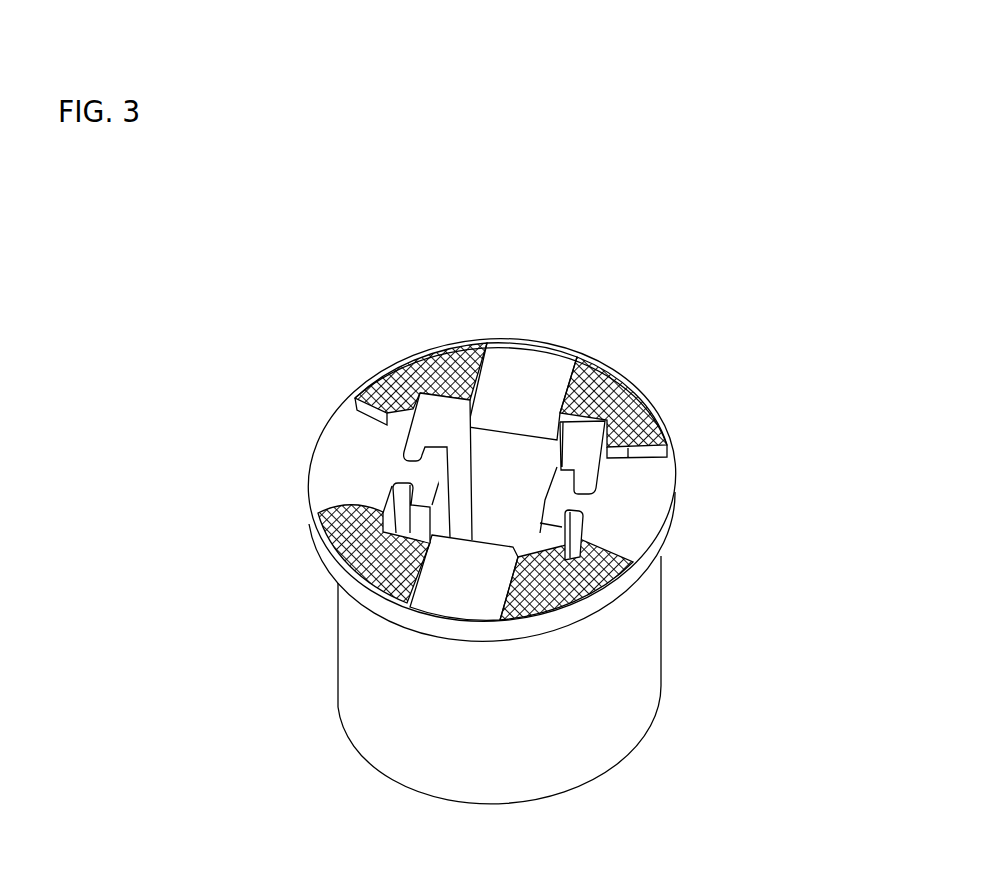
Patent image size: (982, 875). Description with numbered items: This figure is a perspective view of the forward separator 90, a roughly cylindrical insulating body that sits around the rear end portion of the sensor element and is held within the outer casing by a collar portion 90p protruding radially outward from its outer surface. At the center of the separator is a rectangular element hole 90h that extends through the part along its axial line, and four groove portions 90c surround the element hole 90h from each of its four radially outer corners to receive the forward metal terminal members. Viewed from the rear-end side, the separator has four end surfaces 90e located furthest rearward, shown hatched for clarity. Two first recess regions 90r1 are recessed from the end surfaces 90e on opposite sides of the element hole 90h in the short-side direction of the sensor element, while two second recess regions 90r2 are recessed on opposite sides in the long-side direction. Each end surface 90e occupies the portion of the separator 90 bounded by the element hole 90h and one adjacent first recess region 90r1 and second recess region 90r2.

The forward separator 90 is at (712, 604).
The end surface 90e is at (633, 383).
The groove portion 90c is at (443, 412).
The first recess region 90r1 is at (530, 365).
The second recess region 90r2 is at (345, 452).
The element hole 90h is at (517, 490).
The collar portion 90p is at (383, 512).